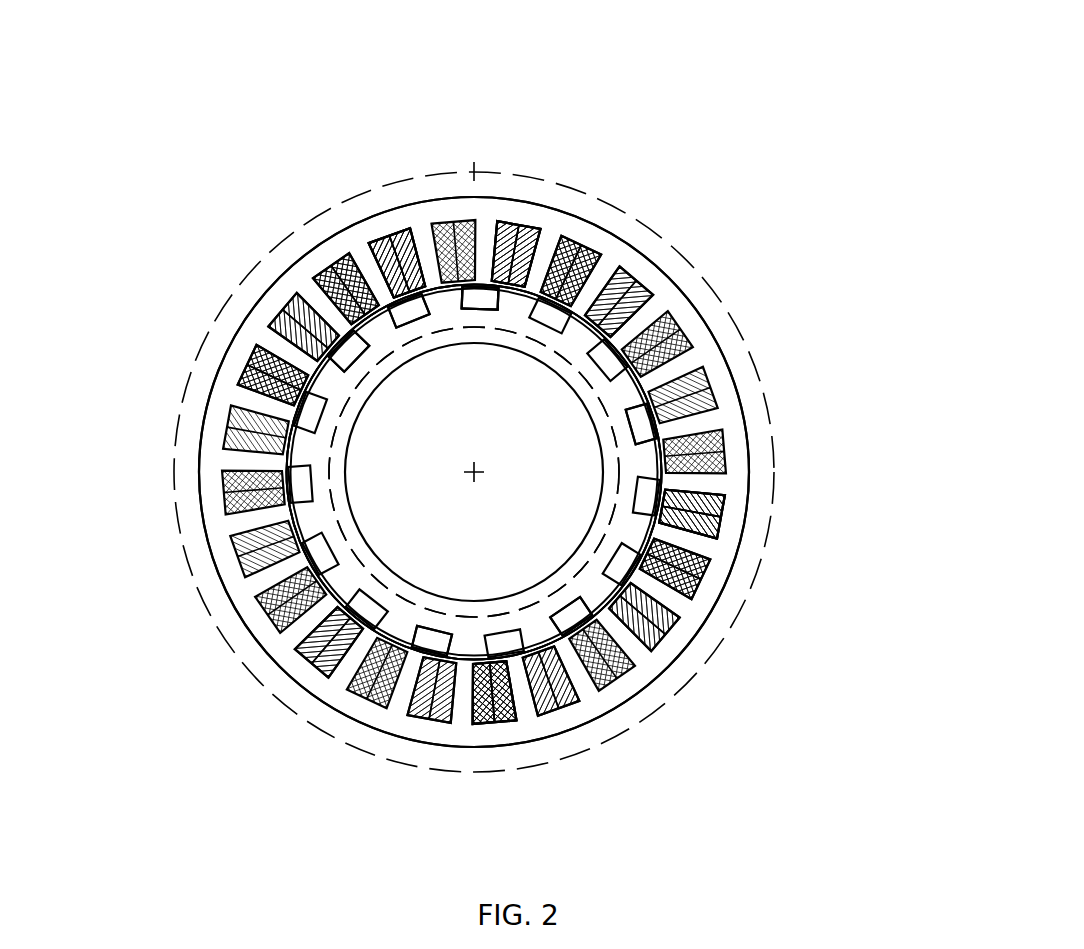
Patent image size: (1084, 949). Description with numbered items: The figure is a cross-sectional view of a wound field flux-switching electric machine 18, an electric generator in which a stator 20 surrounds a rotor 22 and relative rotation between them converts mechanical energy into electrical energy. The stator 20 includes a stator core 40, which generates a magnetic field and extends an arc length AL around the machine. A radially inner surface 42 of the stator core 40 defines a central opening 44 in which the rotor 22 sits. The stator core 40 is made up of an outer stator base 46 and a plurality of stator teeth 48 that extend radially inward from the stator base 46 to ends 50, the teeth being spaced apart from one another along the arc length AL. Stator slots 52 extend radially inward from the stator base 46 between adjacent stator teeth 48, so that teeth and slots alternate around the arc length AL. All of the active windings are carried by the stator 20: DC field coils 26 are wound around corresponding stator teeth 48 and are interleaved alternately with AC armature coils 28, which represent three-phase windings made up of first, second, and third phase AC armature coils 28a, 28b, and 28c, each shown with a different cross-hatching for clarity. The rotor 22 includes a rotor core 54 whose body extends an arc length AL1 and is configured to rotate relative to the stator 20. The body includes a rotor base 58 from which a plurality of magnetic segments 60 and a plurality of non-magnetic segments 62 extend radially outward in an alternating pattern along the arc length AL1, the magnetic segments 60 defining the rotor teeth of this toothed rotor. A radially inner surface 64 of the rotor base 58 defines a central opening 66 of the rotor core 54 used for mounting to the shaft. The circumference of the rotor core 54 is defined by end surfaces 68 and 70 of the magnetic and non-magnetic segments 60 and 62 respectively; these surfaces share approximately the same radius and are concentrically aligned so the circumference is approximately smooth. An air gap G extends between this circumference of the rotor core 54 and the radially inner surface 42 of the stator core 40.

The wound field flux-switching electric machine 18 is at (694, 72).
The stator 20 is at (748, 378).
The rotor 22 is at (307, 518).
The DC field coil 26 is at (727, 442).
The AC armature coil 28 is at (570, 707).
The first phase AC armature coil 28a is at (380, 245).
The second phase AC armature coil 28b is at (400, 235).
The third phase AC armature coil 28c is at (542, 230).
The stator core 40 is at (333, 246).
The radially inner surface 42 is at (481, 290).
The central opening 44 is at (490, 303).
The stator base 46 is at (592, 237).
The stator tooth 48 is at (600, 277).
The end 50 is at (615, 505).
The stator slot 52 is at (238, 368).
The rotor core 54 is at (625, 420).
The rotor base 58 is at (360, 372).
The magnetic segment 60 is at (620, 395).
The non-magnetic segment 62 is at (348, 348).
The radially inner surface 64 is at (415, 335).
The central opening 66 is at (379, 525).
The end surface 68 is at (475, 697).
The end surface 70 is at (497, 708).
The arc length AL is at (476, 160).
The arc length AL1 is at (327, 452).
The air gap G is at (538, 280).